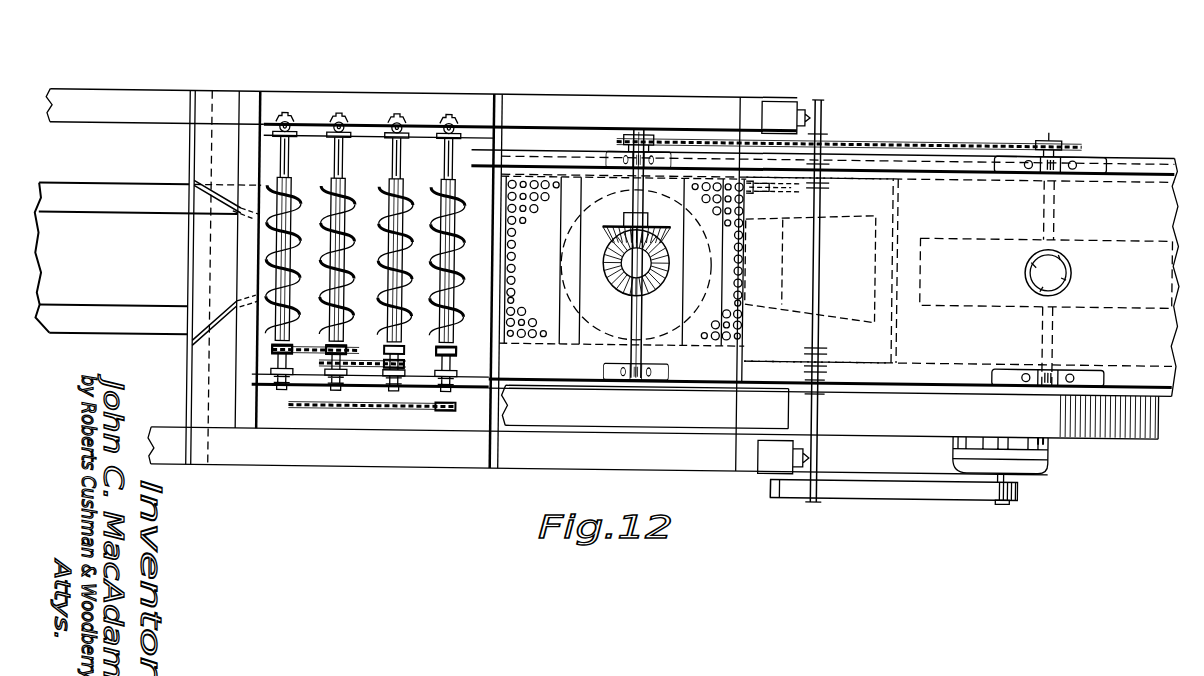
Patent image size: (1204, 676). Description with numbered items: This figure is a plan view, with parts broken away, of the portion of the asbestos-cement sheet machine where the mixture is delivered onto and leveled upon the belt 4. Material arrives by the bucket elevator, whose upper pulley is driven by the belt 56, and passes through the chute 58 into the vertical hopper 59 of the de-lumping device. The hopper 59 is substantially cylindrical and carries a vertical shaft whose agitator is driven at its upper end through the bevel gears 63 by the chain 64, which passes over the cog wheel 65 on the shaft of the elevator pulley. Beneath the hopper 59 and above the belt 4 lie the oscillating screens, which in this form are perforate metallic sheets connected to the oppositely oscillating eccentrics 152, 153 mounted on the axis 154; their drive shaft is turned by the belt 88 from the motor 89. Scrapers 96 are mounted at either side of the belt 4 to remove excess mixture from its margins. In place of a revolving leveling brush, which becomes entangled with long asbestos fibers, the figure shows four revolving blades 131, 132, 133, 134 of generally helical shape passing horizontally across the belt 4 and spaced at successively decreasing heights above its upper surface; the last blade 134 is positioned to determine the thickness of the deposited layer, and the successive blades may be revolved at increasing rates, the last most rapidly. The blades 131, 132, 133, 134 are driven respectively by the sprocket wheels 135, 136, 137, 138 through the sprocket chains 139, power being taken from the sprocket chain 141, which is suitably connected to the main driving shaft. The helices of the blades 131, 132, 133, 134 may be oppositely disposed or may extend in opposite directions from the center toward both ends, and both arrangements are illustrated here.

The belt 4 is at (88, 334).
The belt 56 is at (889, 426).
The chute 58 is at (671, 292).
The vertical hopper 59 is at (656, 305).
The bevel gears 63 is at (663, 223).
The chain 64 is at (952, 140).
The cog wheel 65 is at (1046, 134).
The belt 88 is at (972, 490).
The motor 89 is at (1048, 466).
The scrapers 96 is at (203, 185).
The revolving helical blade 131 is at (435, 188).
The revolving helical blade 132 is at (383, 178).
The revolving helical blade 133 is at (318, 176).
The revolving helical blade 134 is at (272, 176).
The sprocket wheel 135 is at (440, 359).
The sprocket wheel 136 is at (383, 367).
The sprocket wheel 137 is at (325, 357).
The sprocket wheel 138 is at (265, 353).
The sprocket chains 139 is at (305, 351).
The sprocket chain 141 is at (395, 411).
The eccentric 152 is at (822, 182).
The eccentric 153 is at (822, 160).
The axis 154 is at (815, 187).